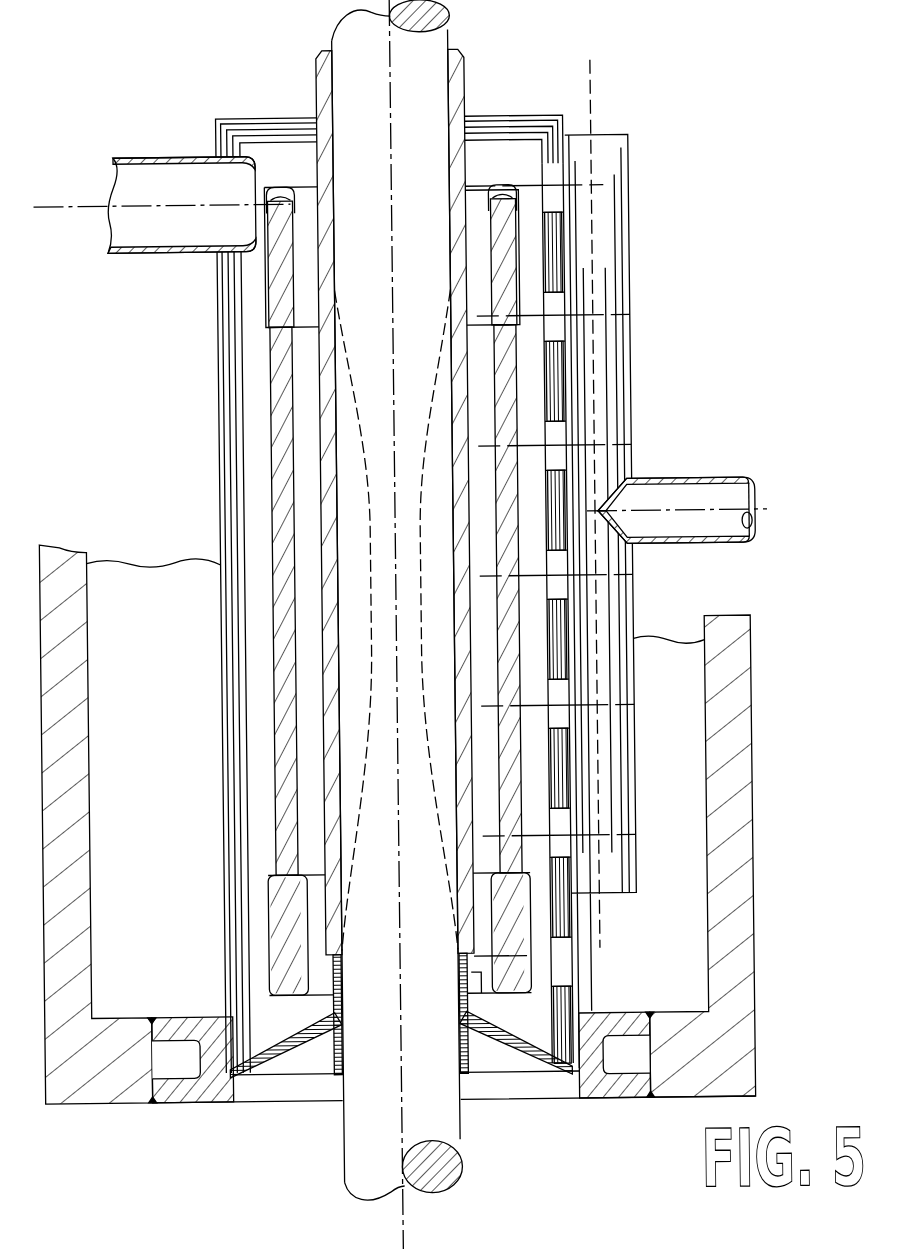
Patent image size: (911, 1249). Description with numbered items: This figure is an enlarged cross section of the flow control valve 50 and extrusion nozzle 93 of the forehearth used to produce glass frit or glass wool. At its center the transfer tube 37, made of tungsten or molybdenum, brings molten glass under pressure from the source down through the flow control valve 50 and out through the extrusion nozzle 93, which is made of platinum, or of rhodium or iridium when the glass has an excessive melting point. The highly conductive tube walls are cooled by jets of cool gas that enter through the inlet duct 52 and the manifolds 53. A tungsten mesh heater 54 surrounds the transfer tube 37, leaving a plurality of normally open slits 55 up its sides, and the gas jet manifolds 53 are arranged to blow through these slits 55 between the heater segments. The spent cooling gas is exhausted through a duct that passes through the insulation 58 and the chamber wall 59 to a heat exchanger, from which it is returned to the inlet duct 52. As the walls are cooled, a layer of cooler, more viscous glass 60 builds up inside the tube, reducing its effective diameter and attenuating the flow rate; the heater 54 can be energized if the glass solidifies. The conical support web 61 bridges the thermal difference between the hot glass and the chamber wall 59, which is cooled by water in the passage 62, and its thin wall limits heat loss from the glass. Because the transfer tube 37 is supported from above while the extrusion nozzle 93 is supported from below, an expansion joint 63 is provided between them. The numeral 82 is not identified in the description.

The transfer tube 37 is at (486, 67).
The flow control valve 50 is at (520, 165).
The inlet duct 52 is at (689, 477).
The manifolds 53 is at (633, 381).
The tungsten mesh heater 54 is at (274, 415).
The open space slits 55 is at (508, 245).
The insulation 58 is at (663, 640).
The chamber wall 59 is at (752, 654).
The cooler more viscous glass 60 is at (368, 507).
The support web 61 is at (505, 1043).
The passage 62 is at (618, 1072).
The expansion joint 63 is at (494, 972).
The inlet tube 82 is at (216, 157).
The extrusion nozzle 93 is at (333, 1070).